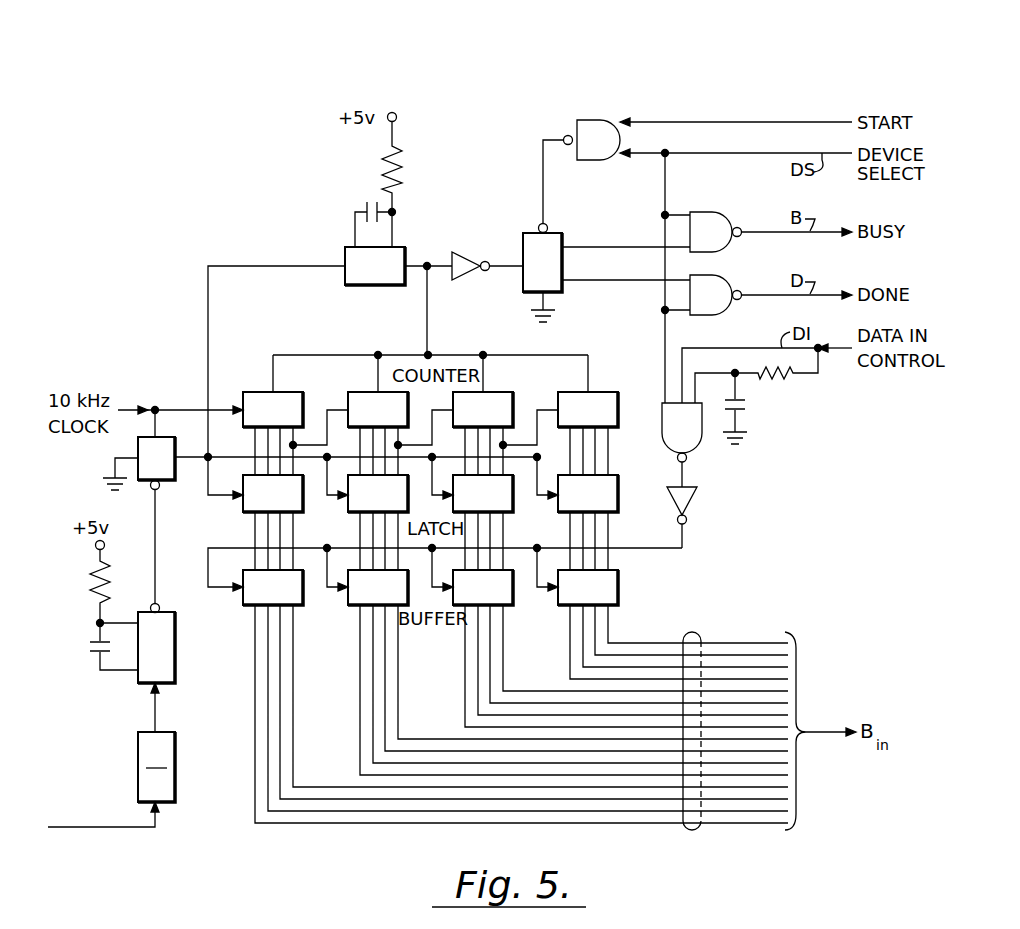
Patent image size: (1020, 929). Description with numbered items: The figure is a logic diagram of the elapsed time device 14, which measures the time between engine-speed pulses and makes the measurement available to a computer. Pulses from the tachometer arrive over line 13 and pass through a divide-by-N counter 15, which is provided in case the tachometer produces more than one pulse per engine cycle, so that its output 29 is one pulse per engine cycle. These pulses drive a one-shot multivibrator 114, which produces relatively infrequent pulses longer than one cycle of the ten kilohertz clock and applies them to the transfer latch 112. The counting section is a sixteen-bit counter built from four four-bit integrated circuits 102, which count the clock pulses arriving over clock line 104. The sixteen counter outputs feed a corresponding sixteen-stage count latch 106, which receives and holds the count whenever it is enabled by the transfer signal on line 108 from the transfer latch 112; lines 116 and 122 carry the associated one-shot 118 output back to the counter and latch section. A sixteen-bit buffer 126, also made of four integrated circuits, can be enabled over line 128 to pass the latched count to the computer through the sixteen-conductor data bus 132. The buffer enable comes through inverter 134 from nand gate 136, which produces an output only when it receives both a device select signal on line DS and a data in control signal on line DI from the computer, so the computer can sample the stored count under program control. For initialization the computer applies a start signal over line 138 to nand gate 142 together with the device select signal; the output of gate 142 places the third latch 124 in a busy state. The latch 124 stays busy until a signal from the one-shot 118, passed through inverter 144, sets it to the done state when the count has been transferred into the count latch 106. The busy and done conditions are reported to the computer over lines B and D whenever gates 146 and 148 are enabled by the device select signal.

The elapsed time device 14 is at (381, 83).
The one-shot 118 is at (398, 266).
The inverter 144 is at (466, 258).
The counter clear line 122 is at (428, 320).
The latch strobe line 116 is at (208, 320).
The third latch 124 is at (553, 245).
The nand gate 142 is at (596, 120).
The start line 138 is at (706, 122).
The gate 146 is at (712, 212).
The gate 148 is at (722, 262).
The nand gate 136 is at (700, 438).
The inverter 134 is at (688, 507).
The buffer enable line 128 is at (688, 548).
The clock line 104 is at (127, 410).
The transfer latch 112 is at (136, 443).
The transfer signal line 108 is at (183, 460).
The one-shot multivibrator 114 is at (166, 644).
The divider output line 29 is at (160, 718).
The divide-by-N counter 15 is at (168, 776).
The input line 13 is at (138, 828).
The counter integrated circuits 102 is at (430, 414).
The count latch 106 is at (430, 522).
The buffer 126 is at (430, 587).
The data bus 132 is at (690, 632).